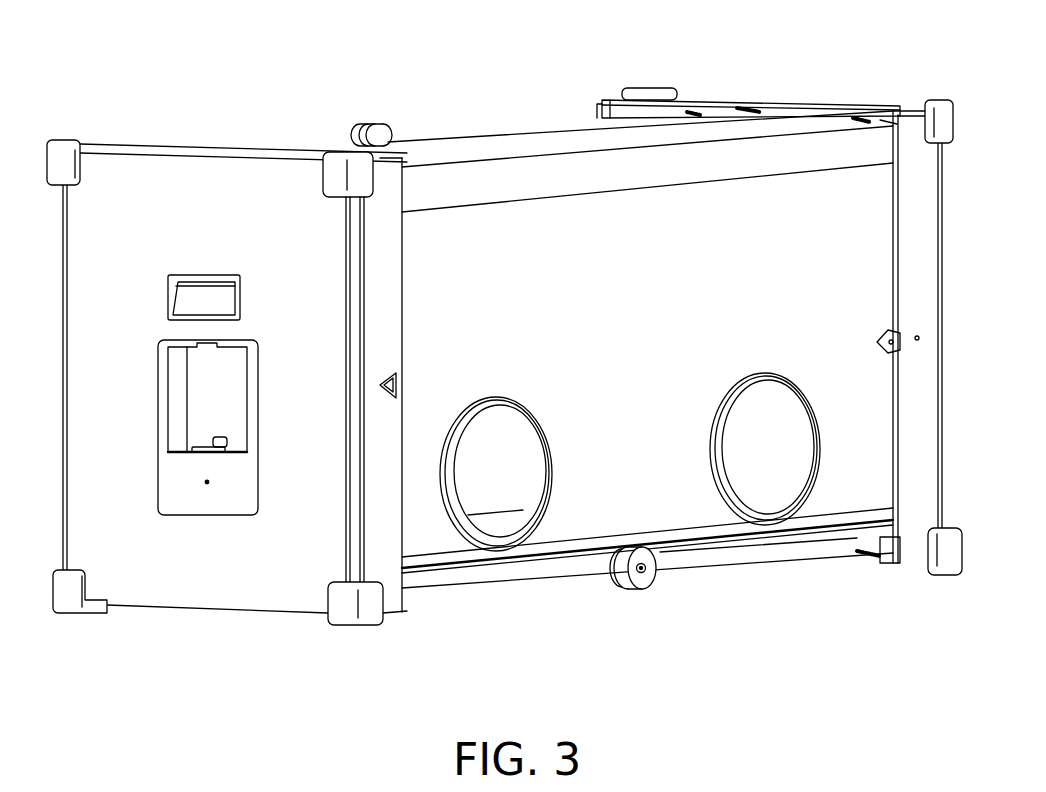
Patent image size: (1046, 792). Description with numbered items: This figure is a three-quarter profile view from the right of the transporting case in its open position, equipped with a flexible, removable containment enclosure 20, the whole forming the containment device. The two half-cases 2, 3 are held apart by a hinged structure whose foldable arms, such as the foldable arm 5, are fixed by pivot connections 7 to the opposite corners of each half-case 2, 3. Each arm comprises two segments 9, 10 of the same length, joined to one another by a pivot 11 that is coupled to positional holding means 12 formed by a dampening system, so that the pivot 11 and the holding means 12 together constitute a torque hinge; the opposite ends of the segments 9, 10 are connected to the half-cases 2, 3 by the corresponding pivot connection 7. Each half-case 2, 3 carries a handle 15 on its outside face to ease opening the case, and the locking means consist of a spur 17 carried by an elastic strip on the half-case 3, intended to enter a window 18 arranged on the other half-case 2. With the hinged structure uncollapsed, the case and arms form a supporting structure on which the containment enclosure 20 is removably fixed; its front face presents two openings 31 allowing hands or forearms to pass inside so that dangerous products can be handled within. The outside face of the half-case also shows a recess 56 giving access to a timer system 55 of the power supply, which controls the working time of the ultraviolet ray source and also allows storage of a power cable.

The half-case 2 is at (128, 195).
The half-case 3 is at (907, 143).
The foldable arm 5 is at (607, 588).
The pivot connection 7 is at (883, 540).
The segment 9 is at (818, 543).
The segment 10 is at (500, 574).
The pivot 11 is at (657, 571).
The positional holding means 12 is at (653, 574).
The handle 15 is at (203, 296).
The spur 17 is at (880, 332).
The window 18 is at (397, 395).
The flexible containment enclosure 20 is at (457, 136).
The opening 31 is at (493, 465).
The timer system 55 is at (203, 438).
The recess 56 is at (230, 403).